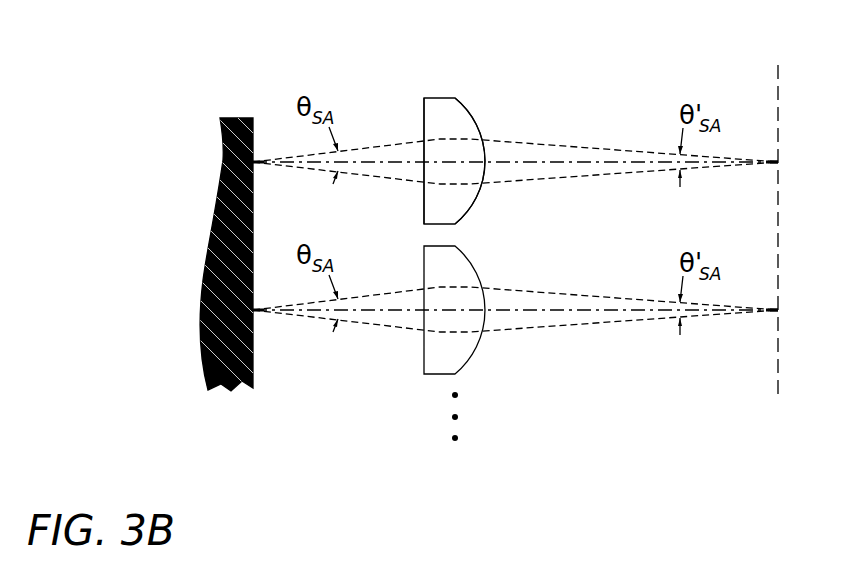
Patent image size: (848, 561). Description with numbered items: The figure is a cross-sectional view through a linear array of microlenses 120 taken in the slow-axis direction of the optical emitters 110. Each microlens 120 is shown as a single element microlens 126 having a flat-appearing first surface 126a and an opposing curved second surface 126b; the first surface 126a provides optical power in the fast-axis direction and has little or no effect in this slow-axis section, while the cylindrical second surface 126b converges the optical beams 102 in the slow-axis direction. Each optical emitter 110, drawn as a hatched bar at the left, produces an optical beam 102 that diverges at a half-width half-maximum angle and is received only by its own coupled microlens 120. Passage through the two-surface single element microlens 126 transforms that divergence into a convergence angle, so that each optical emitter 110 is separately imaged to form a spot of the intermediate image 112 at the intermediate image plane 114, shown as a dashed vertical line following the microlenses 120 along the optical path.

The optical emitter 110 is at (240, 118).
The microlens 120 is at (420, 396).
The optical beam 102 is at (445, 198).
The single element microlens 126 is at (442, 98).
The first surface 126a is at (416, 116).
The second surface 126b is at (474, 106).
The intermediate image 112 is at (768, 142).
The intermediate image plane 114 is at (778, 373).